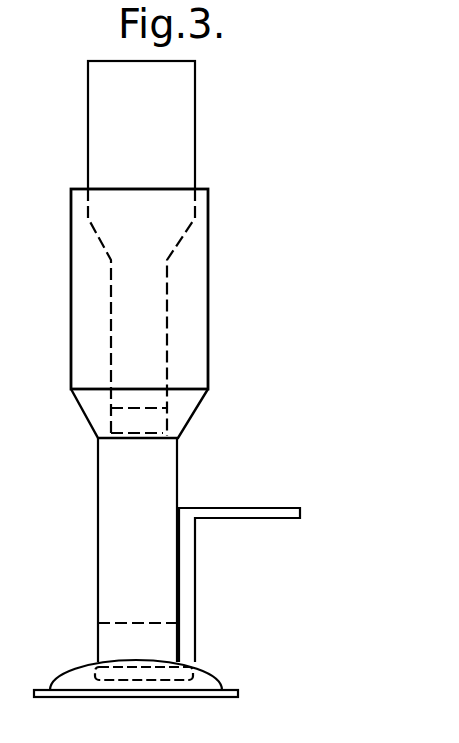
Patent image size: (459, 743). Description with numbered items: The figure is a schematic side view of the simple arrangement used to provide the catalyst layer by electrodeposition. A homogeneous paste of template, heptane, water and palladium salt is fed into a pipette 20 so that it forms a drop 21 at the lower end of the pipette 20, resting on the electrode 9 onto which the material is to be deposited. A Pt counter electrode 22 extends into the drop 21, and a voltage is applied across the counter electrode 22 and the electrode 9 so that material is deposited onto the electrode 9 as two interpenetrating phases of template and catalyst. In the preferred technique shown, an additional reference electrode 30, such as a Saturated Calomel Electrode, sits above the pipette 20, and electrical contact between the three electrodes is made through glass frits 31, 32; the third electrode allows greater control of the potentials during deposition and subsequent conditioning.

The reference electrode 30 is at (180, 130).
The glass frit 31 is at (163, 433).
The pipette 20 is at (177, 476).
The glass frit 32 is at (165, 638).
The drop 21 is at (70, 670).
The Pt counter electrode 22 is at (200, 668).
The electrode 9 is at (115, 697).